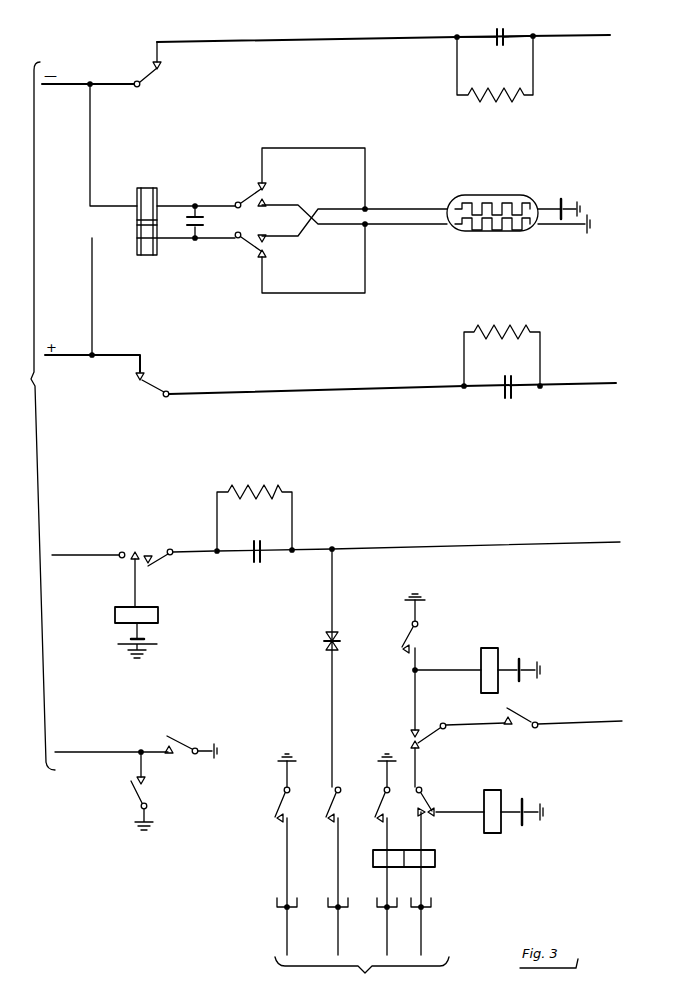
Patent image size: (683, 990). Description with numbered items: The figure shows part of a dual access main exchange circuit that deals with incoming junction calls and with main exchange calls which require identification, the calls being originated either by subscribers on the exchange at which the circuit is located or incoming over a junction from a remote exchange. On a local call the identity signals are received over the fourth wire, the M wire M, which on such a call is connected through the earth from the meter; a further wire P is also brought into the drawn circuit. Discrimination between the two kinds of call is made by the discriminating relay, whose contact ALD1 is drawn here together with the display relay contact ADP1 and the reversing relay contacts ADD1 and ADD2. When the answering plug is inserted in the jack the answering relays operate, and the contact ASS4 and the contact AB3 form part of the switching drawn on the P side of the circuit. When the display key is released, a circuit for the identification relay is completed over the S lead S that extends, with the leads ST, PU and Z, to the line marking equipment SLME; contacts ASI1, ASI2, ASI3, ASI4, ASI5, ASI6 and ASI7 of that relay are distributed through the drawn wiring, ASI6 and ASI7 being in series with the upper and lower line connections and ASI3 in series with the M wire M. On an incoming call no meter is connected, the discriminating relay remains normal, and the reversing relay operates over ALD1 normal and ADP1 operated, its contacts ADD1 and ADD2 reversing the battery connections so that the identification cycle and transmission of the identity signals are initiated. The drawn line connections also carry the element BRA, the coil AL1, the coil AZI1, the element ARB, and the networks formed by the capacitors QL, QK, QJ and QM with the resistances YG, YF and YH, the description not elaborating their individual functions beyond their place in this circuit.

The switch contact ASI6 is at (163, 74).
The capacitor QL is at (495, 27).
The resistor YG is at (495, 78).
The relay coil AL1 is at (158, 173).
The capacitor QJ is at (197, 222).
The switch contact ADD1 is at (341, 186).
The switch contact / relay coil ADD2 is at (512, 861).
The heater / filament device BRA is at (518, 204).
The switch contact / relay coil ASI7 is at (462, 869).
The resistor YF is at (502, 348).
The capacitor QK is at (506, 377).
The M wire M is at (85, 545).
The switch contact ASI3 is at (166, 548).
The resistor YH is at (254, 509).
The capacitor QM is at (258, 561).
The contact of relay ALD ALD1 is at (199, 612).
The bidirectional element ARB is at (315, 668).
The switch contact ASI4 is at (426, 662).
The relay coil / switch contact AZI1 is at (522, 639).
The contact of relay ADP ADP1 is at (534, 713).
The terminal P is at (98, 743).
The switch contact AB3 is at (179, 738).
The contact of relay ASS ASS4 is at (157, 791).
The contact of relay ASI ASI2 is at (267, 854).
The contact of relay ASI ASI1 is at (316, 871).
The contact of relay ASI ASI5 is at (369, 854).
The terminal ST is at (299, 950).
The terminal PU is at (351, 950).
The terminal Z is at (395, 950).
The S lead S is at (430, 950).
The terminal group SLME is at (362, 973).